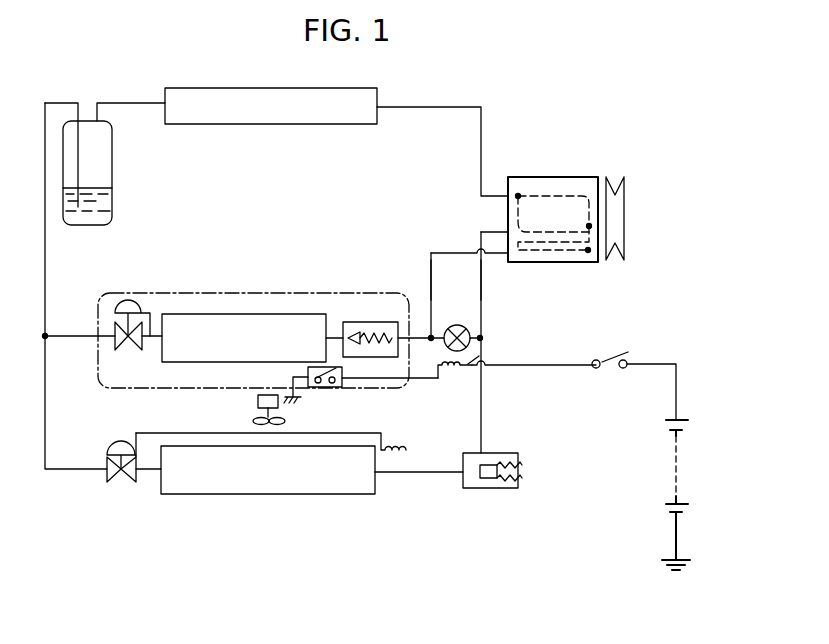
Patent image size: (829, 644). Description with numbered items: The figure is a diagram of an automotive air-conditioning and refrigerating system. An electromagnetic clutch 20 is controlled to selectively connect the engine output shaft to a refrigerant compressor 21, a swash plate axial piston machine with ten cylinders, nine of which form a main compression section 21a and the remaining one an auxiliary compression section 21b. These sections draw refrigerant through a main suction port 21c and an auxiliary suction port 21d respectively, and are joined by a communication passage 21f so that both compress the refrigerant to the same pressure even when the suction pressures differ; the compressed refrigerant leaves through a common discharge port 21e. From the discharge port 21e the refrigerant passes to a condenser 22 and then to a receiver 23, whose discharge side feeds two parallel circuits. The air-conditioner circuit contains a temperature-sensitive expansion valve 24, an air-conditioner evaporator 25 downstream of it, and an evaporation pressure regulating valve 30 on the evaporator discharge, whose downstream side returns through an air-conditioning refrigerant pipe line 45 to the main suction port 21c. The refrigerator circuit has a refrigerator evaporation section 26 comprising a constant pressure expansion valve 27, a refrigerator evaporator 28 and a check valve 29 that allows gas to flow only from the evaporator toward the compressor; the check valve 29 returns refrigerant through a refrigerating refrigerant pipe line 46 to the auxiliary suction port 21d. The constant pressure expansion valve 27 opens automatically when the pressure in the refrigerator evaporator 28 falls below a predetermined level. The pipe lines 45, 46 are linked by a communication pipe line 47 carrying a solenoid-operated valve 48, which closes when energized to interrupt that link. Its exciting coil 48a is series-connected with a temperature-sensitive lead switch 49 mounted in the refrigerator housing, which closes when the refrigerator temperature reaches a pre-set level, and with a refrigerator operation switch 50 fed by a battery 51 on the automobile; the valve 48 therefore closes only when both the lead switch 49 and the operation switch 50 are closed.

The electromagnetic clutch 20 is at (625, 193).
The refrigerant compressor 21 is at (567, 177).
The main compression section 21a is at (545, 196).
The auxiliary compression section 21b is at (575, 256).
The main suction port 21c is at (508, 232).
The auxiliary suction port 21d is at (506, 255).
The common discharge port 21e is at (508, 195).
The communication passage 21f is at (592, 234).
The condenser 22 is at (346, 72).
The receiver 23 is at (113, 152).
The temperature-sensitive expansion valve 24 is at (110, 478).
The air-conditioner evaporator 25 is at (230, 494).
The refrigerator evaporation section 26 is at (110, 293).
The constant pressure expansion valve 27 is at (135, 303).
The refrigerator evaporator 28 is at (291, 314).
The check valve 29 is at (366, 322).
The evaporation pressure regulating valve 30 is at (466, 490).
The air-conditioning refrigerant pipe line 45 is at (483, 283).
The refrigerating refrigerant pipe line 46 is at (431, 275).
The communication pipe line 47 is at (441, 372).
The solenoid-operated valve 48 is at (467, 326).
The exciting coil 48a is at (480, 357).
The lead switch 49 is at (333, 388).
The refrigerator operation switch 50 is at (612, 368).
The battery 51 is at (677, 422).